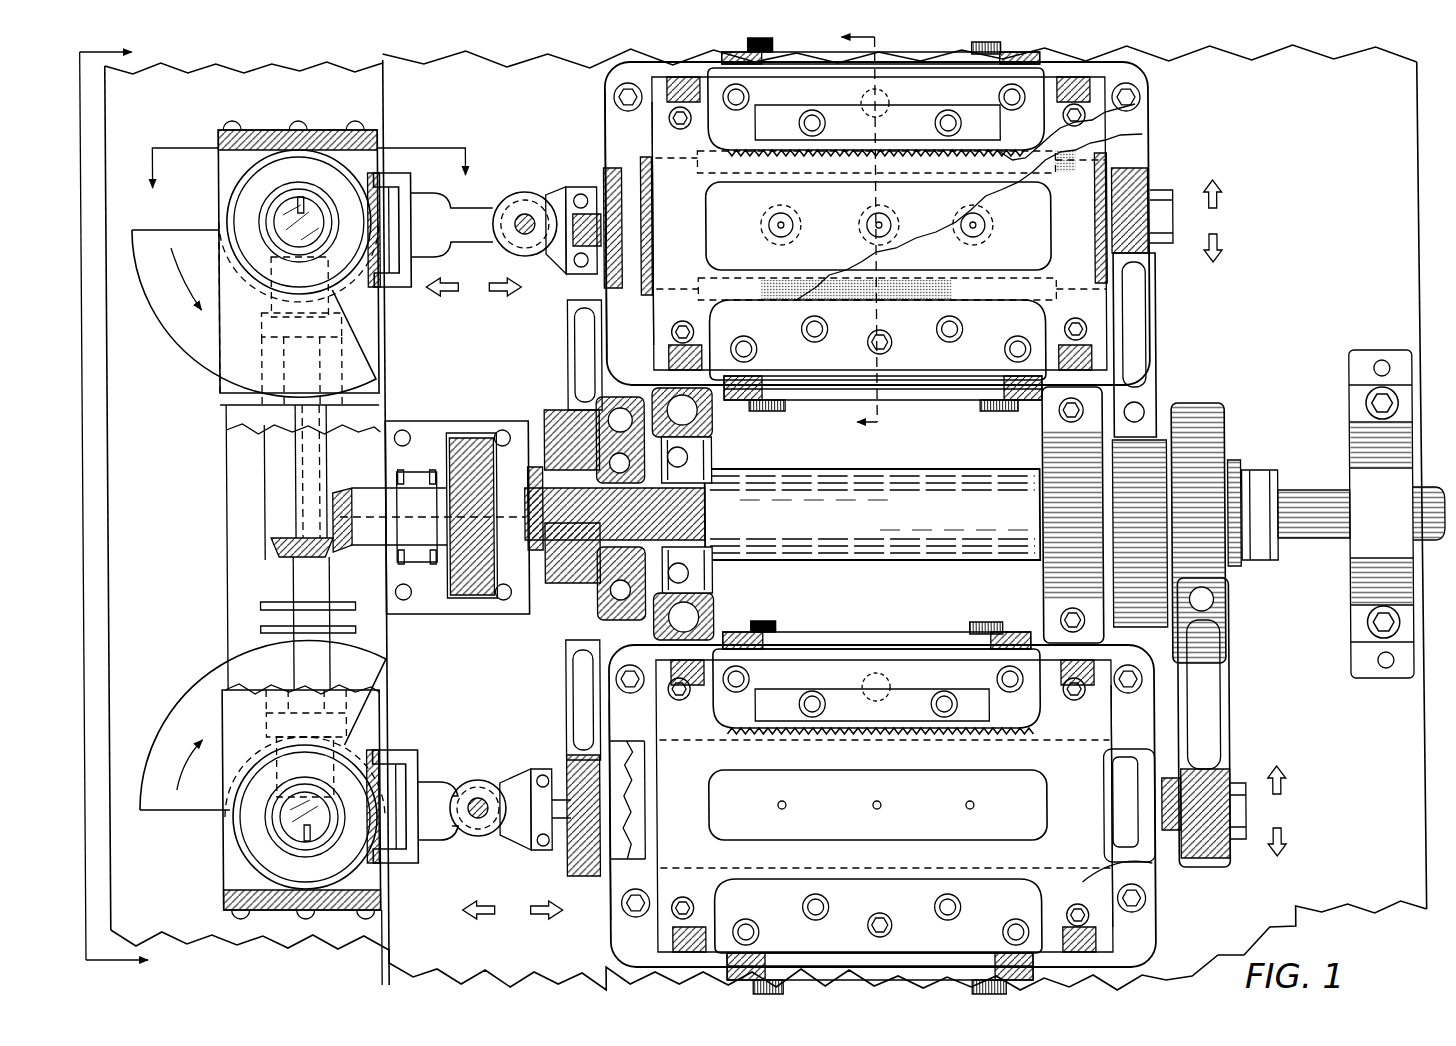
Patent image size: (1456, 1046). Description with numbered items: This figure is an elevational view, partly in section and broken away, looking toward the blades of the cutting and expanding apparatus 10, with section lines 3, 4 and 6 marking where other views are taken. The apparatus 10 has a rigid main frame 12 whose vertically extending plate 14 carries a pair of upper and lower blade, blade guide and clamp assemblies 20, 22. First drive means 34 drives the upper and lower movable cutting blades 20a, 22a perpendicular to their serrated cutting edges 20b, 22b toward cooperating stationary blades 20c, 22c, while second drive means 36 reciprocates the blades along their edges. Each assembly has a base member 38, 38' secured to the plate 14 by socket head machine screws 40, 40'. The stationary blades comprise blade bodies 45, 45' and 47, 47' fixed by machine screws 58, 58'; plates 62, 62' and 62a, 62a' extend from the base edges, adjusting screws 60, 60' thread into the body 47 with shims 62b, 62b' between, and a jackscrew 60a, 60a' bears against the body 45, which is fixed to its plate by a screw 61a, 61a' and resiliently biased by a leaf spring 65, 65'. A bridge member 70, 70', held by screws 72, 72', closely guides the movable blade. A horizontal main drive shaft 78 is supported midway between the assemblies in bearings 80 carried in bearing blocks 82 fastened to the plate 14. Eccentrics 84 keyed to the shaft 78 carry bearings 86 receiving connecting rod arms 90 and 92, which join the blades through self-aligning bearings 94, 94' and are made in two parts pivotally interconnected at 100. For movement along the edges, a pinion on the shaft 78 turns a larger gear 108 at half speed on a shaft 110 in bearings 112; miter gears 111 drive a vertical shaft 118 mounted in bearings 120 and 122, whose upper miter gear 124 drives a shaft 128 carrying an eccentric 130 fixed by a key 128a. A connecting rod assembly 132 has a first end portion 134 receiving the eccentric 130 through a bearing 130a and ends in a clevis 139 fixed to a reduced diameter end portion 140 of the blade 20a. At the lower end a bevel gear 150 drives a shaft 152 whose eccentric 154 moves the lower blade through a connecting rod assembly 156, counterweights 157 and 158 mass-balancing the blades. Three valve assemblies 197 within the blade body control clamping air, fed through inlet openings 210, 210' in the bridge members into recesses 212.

The section line 3- 3 is at (847, 231).
The section line 4- 4 is at (123, 507).
The section line 6- 6 is at (308, 183).
The cutting and expanding apparatus 10 is at (1206, 124).
The main frame 12 is at (478, 57).
The vertically extending plate 14 is at (1382, 262).
The upper blade, blade guide, and clamp assembly 20 is at (1124, 137).
The upper movable cutting blade 20a is at (866, 274).
The cutting edges 20b is at (872, 147).
The stationary cutting blades 20c is at (722, 128).
The lower blade, blade guide, and clamp assembly 22 is at (1144, 882).
The lower movable cutting blade 22a is at (612, 775).
The cutting edges 22b is at (895, 727).
The stationary cutting blades 22c is at (1014, 710).
The first drive means 34 is at (1250, 575).
The second drive means 36 is at (410, 290).
The base member 38 is at (584, 225).
The base member 38' is at (591, 815).
The socket head machine screws 40 is at (879, 488).
The socket head machine screws 40' is at (911, 801).
The blade body 45 is at (897, 94).
The blade body 45' is at (876, 661).
The blade body 47 is at (877, 367).
The blade body 47' is at (878, 897).
The machine screws 58 is at (878, 378).
The machine screws 58' is at (875, 769).
The adjusting screws 60 is at (885, 421).
The adjusting screws 60' is at (916, 963).
The jackscrew 60a is at (752, 62).
The jackscrew 60a' is at (781, 605).
The screw 61a is at (961, 64).
The screw 61a' is at (973, 611).
The plate 62 is at (880, 45).
The plate 62' is at (876, 619).
The plate 62a is at (883, 411).
The plate 62a' is at (880, 954).
The shims 62b is at (883, 375).
The shims 62b' is at (880, 941).
The leaf spring 65 is at (863, 90).
The leaf spring 65' is at (891, 645).
The bridge member 70 is at (924, 202).
The bridge member 70' is at (957, 830).
The socket head machine screws 72 is at (873, 222).
The socket head machine screws 72' is at (883, 820).
The main drive shaft 78 is at (910, 529).
The bearings 80 is at (713, 461).
The bearing blocks 82 is at (713, 590).
The eccentrics 84 is at (538, 466).
The bearings 86 is at (608, 440).
The connecting rod arms 90 is at (1156, 316).
The connecting rod arms 92 is at (1226, 680).
The self-aligning bearings 94 is at (896, 228).
The self-aligning bearings 94' is at (895, 804).
The pivotal interconnection 100 is at (1143, 410).
The gear 108 is at (462, 596).
The shaft 110 is at (358, 518).
The miter gears 111 is at (333, 500).
The bearings 112 is at (420, 463).
The vertically extending shaft 118 is at (290, 470).
The bearing 120 is at (214, 344).
The bearing 122 is at (235, 702).
The miter gear 124 is at (315, 247).
The shaft 128 is at (290, 225).
The key 128a is at (300, 198).
The eccentric 130 is at (270, 200).
The bearing 130a is at (302, 150).
The connecting rod assembly 132 is at (472, 200).
The first end portion 134 is at (300, 128).
The clevis 139 is at (509, 776).
The reduced diameter end portion 140 is at (575, 192).
The bevel gear 150 is at (290, 824).
The shaft 152 is at (298, 838).
The eccentric 154 is at (290, 850).
The connecting rod assembly 156 is at (453, 838).
The counterweight 157 is at (167, 296).
The counterweight 158 is at (195, 722).
The valve assemblies 197 is at (866, 220).
The inlet openings 210 is at (872, 501).
The inlet openings 210' is at (857, 794).
The recesses 212 is at (976, 232).